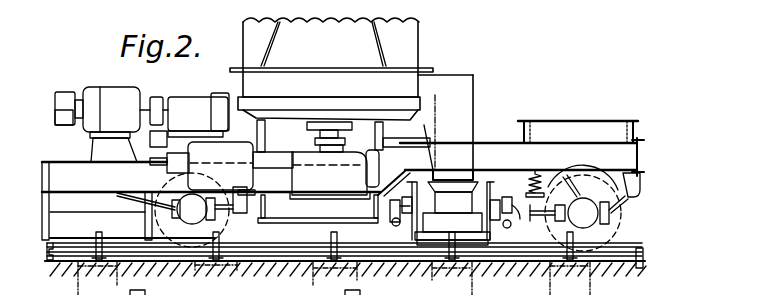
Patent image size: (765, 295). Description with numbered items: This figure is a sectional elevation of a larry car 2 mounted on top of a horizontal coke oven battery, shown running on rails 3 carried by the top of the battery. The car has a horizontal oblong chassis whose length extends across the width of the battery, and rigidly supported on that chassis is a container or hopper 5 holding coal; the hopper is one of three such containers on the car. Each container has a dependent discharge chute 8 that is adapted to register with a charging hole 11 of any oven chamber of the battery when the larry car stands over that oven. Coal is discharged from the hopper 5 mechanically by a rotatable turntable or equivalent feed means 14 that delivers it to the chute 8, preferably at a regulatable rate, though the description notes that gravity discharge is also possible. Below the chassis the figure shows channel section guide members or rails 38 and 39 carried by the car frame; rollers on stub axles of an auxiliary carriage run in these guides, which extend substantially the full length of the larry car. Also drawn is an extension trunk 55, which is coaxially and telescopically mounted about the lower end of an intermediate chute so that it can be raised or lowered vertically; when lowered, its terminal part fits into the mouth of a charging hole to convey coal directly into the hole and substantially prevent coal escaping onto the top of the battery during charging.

The larry car 2 is at (549, 160).
The rails 3 is at (345, 278).
The container or hopper 5 is at (412, 40).
The discharge chute 8 is at (468, 113).
The charging hole 11 is at (470, 290).
The rotatable turntable feed means 14 is at (413, 117).
The channel section guide member or rail 38 is at (512, 224).
The channel section guide member or rail 39 is at (393, 224).
The extension trunk 55 is at (443, 228).